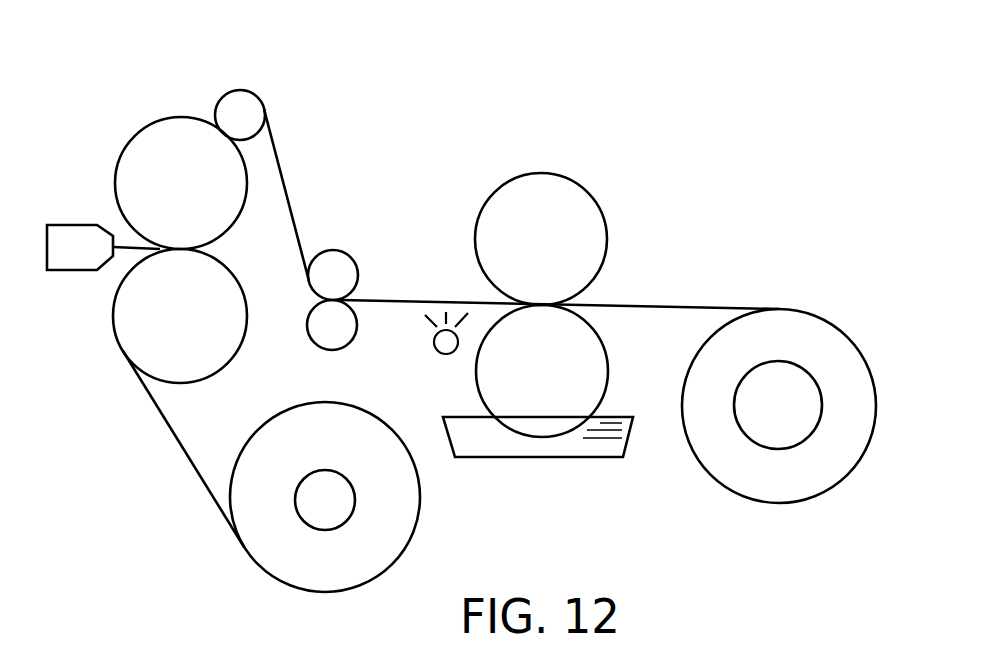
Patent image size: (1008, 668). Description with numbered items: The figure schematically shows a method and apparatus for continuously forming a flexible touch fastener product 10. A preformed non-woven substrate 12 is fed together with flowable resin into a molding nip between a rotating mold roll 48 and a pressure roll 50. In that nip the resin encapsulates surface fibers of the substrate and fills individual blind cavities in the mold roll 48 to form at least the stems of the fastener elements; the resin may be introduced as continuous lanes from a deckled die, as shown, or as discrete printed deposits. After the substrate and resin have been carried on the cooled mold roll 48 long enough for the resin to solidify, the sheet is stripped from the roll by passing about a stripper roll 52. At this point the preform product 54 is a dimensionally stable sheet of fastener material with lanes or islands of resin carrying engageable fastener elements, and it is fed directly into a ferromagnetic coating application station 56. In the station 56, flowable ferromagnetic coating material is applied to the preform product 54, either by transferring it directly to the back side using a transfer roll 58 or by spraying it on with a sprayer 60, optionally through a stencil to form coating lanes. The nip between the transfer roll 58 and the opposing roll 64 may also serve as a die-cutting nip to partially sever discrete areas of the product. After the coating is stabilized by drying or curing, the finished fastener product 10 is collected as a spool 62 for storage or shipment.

The fastener product 10 is at (663, 305).
The non-woven substrate 12 is at (165, 423).
The mold roll 48 is at (168, 117).
The pressure roll 50 is at (213, 373).
The stripper roll 52 is at (240, 90).
The preform product 54 is at (290, 202).
The ferromagnetic coating application station 56 is at (546, 279).
The transfer roll 58 is at (477, 372).
The sprayer 60 is at (434, 342).
The spool 62 is at (695, 457).
The roll 64 is at (607, 216).